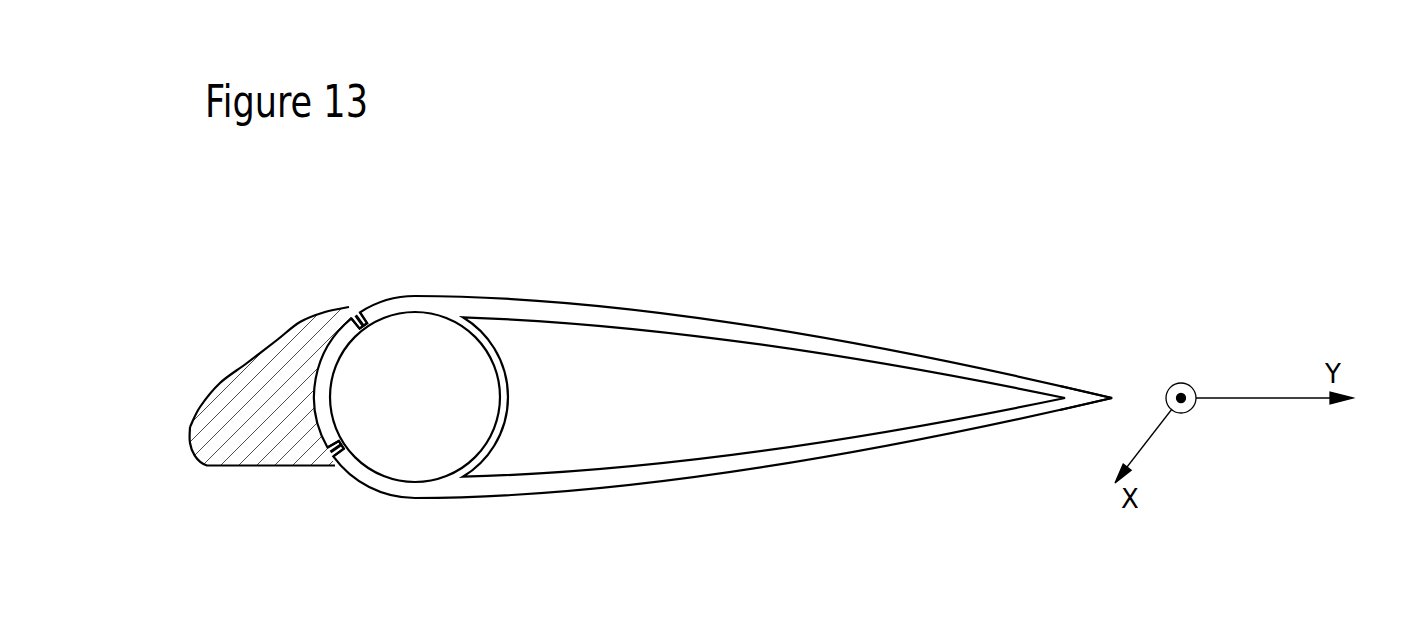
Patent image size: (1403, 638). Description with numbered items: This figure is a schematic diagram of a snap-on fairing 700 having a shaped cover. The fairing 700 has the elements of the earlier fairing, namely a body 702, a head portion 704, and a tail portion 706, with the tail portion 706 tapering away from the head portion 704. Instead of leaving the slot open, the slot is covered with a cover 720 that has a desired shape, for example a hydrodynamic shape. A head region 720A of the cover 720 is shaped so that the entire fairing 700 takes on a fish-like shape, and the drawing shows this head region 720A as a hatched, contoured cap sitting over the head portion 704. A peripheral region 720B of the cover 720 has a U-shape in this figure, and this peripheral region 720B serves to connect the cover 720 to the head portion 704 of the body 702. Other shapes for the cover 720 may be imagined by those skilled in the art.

The fairing 700 is at (699, 120).
The body 702 is at (690, 317).
The head portion 704 is at (405, 300).
The tail portion 706 is at (1015, 373).
The cover 720 is at (256, 414).
The head region 720A is at (212, 382).
The peripheral region 720B is at (317, 437).